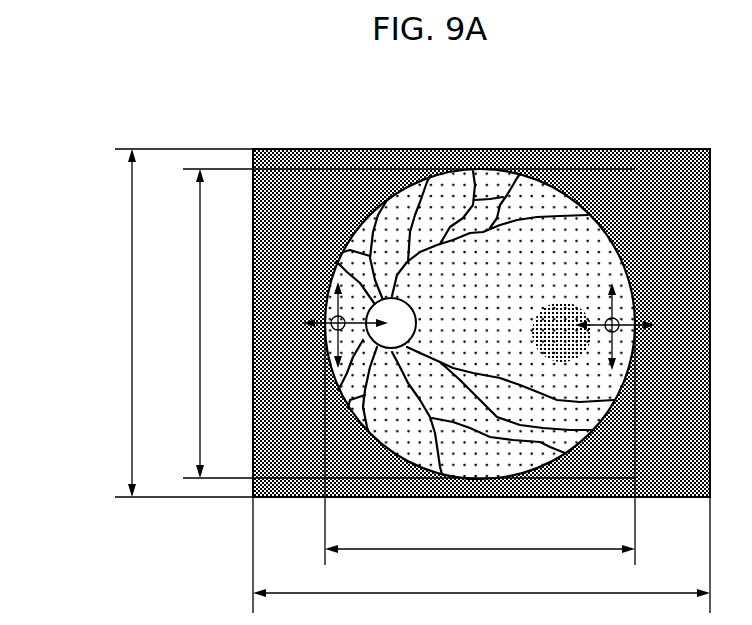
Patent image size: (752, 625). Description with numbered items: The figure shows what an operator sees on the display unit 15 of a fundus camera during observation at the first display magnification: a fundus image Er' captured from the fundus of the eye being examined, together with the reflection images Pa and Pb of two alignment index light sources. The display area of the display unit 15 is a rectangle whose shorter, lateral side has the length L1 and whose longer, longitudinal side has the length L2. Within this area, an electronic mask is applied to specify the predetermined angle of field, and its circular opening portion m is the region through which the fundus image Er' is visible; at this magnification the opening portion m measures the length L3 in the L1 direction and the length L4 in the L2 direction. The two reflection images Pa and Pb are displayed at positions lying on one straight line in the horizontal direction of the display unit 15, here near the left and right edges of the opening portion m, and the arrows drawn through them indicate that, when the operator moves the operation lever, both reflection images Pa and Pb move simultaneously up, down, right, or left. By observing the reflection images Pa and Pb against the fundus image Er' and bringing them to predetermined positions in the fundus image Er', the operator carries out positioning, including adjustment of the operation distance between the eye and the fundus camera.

The display unit 15 is at (641, 149).
The fundus image Er' is at (480, 293).
The opening portion of the electronic mask m is at (549, 182).
The reflection image of alignment index Pa is at (332, 318).
The reflection image of alignment index Pb is at (619, 320).
The length of display area in lateral direction L1 is at (175, 323).
The length of display area in longitudinal direction L2 is at (481, 555).
The length of mask opening in L1 direction L3 is at (401, 323).
The length of mask opening in L2 direction L4 is at (480, 444).